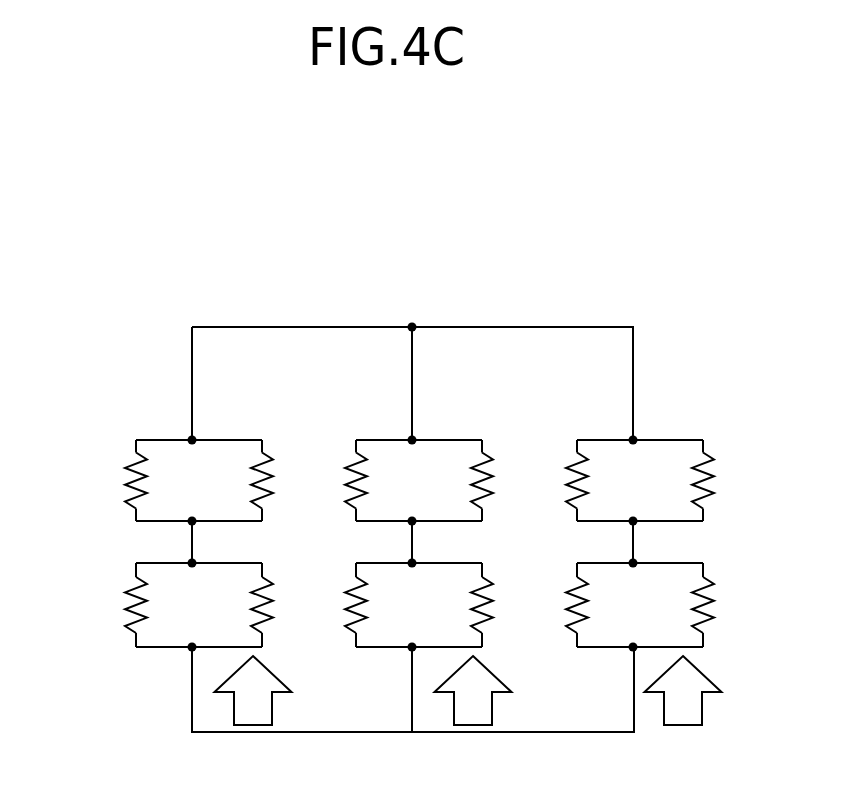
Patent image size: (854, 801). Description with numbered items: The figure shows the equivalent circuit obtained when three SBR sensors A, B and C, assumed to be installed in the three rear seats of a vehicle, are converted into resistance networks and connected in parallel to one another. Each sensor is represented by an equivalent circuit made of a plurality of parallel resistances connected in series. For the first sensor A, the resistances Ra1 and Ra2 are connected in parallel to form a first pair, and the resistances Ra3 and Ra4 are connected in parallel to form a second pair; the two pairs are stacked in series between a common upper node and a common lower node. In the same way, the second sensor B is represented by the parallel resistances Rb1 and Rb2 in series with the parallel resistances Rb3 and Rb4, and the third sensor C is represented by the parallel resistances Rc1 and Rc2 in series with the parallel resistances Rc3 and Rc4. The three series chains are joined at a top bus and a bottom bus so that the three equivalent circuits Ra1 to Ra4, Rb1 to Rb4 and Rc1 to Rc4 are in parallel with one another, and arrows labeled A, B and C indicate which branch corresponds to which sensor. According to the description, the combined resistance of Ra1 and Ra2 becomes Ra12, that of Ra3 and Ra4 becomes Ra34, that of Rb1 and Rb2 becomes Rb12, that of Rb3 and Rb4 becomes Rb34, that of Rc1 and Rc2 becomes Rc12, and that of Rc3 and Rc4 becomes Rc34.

The resistance Ra1 is at (225, 480).
The resistance Ra2 is at (108, 480).
The resistance Ra3 is at (225, 605).
The resistance Ra4 is at (108, 605).
The resistance Rb1 is at (445, 480).
The resistance Rb2 is at (328, 480).
The resistance Rb3 is at (445, 605).
The resistance Rb4 is at (328, 605).
The resistance Rc1 is at (666, 480).
The resistance Rc2 is at (550, 480).
The resistance Rc3 is at (666, 605).
The resistance Rc4 is at (550, 605).
The SBR sensor A is at (253, 690).
The SBR sensor B is at (473, 690).
The SBR sensor C is at (683, 690).